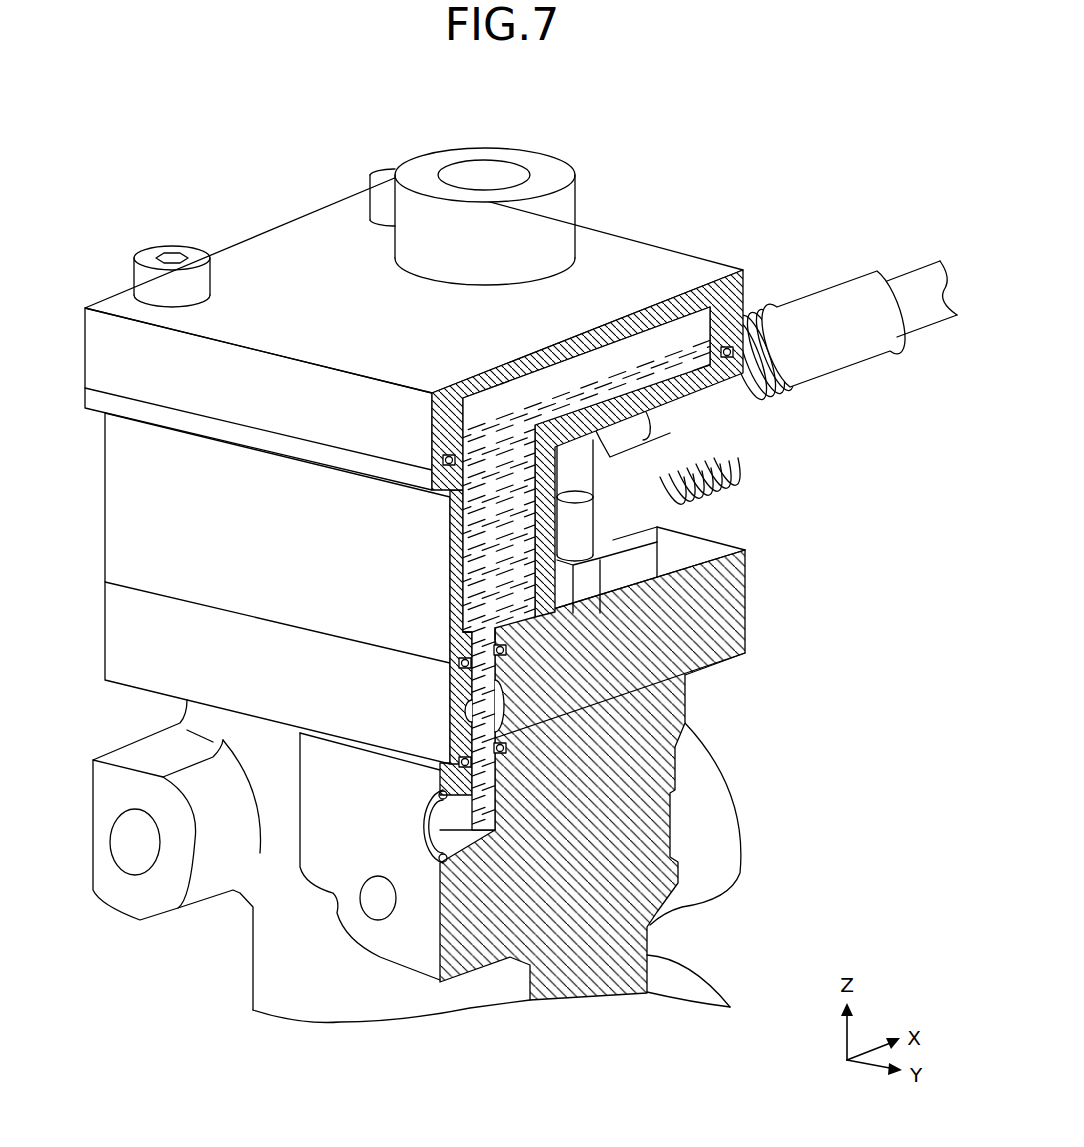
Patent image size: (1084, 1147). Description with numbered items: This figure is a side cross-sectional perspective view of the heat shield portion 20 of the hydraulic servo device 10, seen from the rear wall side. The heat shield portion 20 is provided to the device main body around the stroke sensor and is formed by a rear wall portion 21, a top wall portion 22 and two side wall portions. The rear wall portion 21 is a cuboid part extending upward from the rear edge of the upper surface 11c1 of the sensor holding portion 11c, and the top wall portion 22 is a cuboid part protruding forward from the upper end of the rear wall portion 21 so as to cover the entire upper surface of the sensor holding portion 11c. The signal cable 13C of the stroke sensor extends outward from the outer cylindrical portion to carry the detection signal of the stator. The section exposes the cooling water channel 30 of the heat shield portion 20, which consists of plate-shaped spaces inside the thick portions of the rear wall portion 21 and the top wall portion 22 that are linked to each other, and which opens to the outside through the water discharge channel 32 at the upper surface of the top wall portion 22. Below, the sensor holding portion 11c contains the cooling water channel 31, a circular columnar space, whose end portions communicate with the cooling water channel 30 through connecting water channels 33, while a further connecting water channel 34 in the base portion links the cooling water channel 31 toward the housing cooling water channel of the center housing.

The hydraulic servo device 10 is at (728, 925).
The sensor holding portion 11c is at (728, 603).
The upper surface 11c1 is at (694, 550).
The signal cable 13C is at (912, 287).
The heat shield portion 20 is at (200, 215).
The rear wall portion 21 is at (118, 492).
The top wall portion 22 is at (260, 245).
The cooling water channel 30 is at (675, 318).
The cooling water channel 31 is at (458, 695).
The water discharge channel 32 is at (490, 170).
The connecting water channel 33 is at (480, 626).
The connecting water channel 34 is at (442, 820).